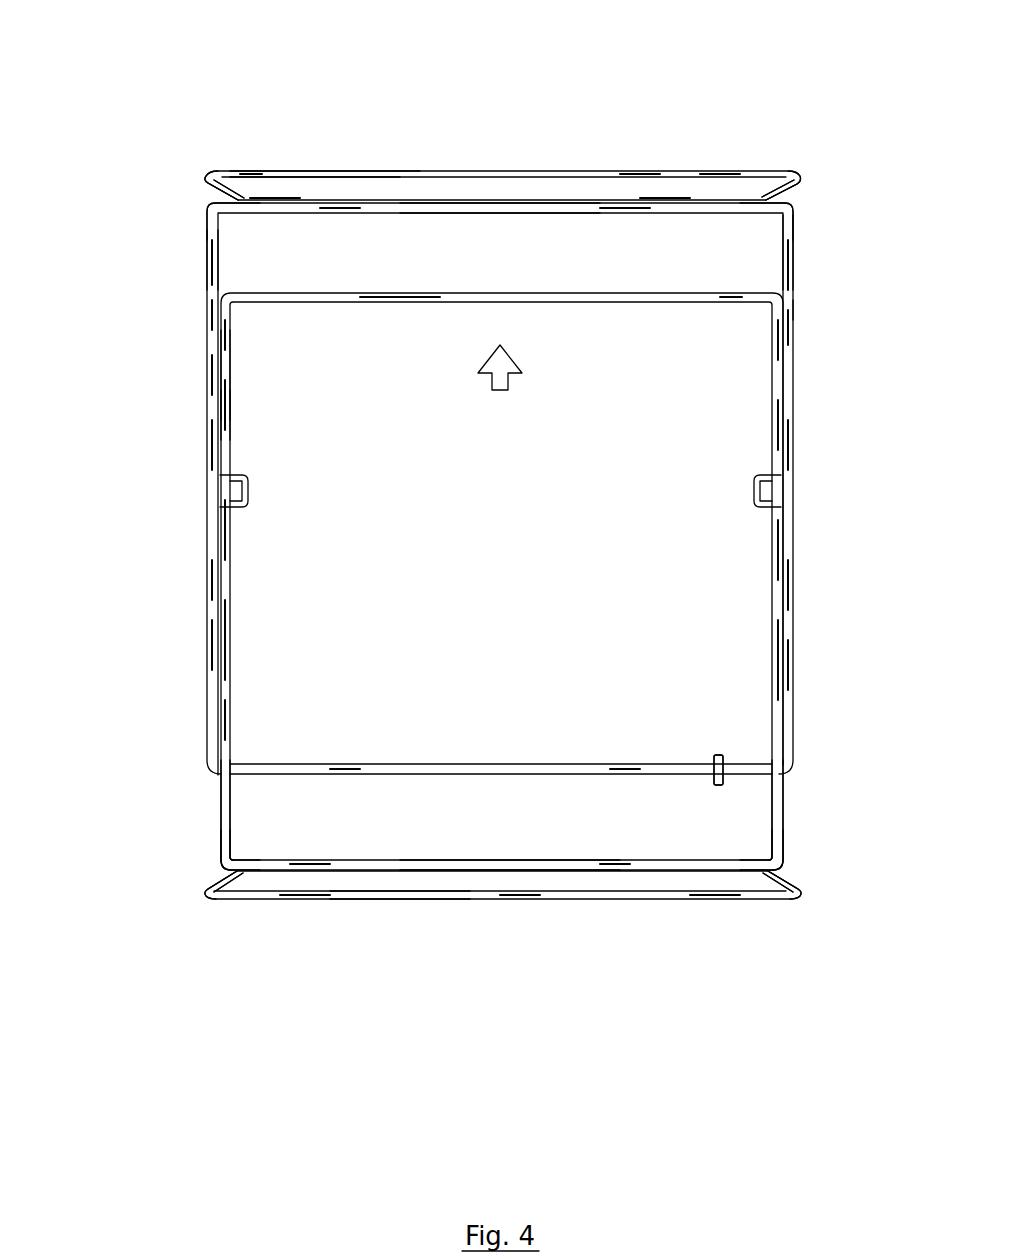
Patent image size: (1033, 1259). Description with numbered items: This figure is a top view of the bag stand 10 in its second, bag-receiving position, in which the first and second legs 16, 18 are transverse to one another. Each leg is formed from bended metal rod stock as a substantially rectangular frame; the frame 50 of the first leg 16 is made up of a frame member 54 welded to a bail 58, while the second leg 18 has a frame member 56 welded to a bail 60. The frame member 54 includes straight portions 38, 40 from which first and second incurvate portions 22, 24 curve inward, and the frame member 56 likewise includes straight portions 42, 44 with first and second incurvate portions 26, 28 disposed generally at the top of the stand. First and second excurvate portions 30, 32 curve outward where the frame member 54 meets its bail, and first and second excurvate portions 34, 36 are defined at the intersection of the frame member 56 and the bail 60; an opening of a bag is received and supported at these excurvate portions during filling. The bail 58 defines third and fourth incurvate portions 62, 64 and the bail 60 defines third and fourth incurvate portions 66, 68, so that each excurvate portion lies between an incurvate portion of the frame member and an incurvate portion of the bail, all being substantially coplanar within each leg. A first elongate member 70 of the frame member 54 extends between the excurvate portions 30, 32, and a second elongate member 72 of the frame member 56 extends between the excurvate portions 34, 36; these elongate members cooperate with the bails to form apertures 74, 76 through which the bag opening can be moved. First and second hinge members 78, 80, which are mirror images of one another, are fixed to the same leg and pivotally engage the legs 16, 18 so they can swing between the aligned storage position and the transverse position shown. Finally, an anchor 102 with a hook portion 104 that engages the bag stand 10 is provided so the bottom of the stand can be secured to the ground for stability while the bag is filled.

The bag stand 10 is at (906, 152).
The first leg 16 is at (196, 302).
The second leg 18 is at (210, 830).
The first incurvate portion 22 is at (209, 205).
The second incurvate portion 24 is at (797, 205).
The first incurvate portion 26 is at (232, 860).
The second incurvate portion 28 is at (775, 848).
The first excurvate portion 30 is at (200, 192).
The second excurvate portion 32 is at (798, 192).
The first excurvate portion 34 is at (210, 872).
The second excurvate portion 36 is at (800, 868).
The straight portion 38 is at (215, 250).
The straight portion 40 is at (791, 246).
The straight portion 42 is at (227, 810).
The straight portion 44 is at (786, 822).
The substantially rectangular frame 50 is at (399, 98).
The frame member 54 is at (216, 384).
The frame member 56 is at (226, 406).
The bail 58 is at (598, 168).
The bail 60 is at (610, 900).
The third incurvate portion 62 is at (205, 182).
The fourth incurvate portion 64 is at (800, 166).
The third incurvate portion 66 is at (205, 896).
The fourth incurvate portion 68 is at (799, 893).
The first elongate member 70 is at (513, 205).
The second elongate member 72 is at (527, 862).
The aperture 74 is at (293, 177).
The aperture 76 is at (396, 889).
The first hinge member 78 is at (268, 548).
The second hinge member 80 is at (737, 548).
The anchor 102 is at (505, 385).
The hook portion 104 is at (718, 754).